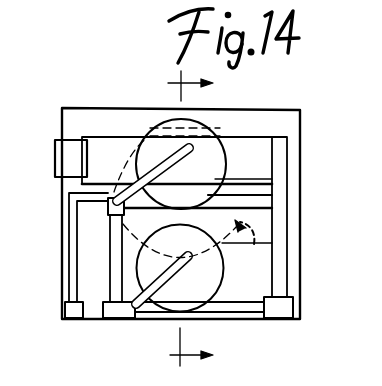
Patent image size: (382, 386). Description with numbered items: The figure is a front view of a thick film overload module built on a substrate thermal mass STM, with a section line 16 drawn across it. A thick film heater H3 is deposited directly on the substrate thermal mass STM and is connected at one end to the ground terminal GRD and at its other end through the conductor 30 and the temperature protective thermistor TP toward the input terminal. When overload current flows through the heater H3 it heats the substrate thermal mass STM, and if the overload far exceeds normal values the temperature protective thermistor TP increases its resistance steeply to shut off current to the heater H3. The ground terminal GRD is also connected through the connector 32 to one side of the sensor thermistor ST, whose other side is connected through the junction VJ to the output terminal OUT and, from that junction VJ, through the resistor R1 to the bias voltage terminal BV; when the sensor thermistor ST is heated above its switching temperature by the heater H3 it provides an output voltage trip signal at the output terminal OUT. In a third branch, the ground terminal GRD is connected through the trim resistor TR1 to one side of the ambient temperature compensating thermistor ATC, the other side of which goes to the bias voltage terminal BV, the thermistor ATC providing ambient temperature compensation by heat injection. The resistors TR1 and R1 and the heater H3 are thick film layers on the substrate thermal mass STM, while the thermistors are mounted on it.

The substrate thermal mass STM is at (79, 108).
The section line 16 is at (175, 220).
The thick film heater H3 is at (124, 118).
The conductor 30 is at (70, 154).
The sensor thermistor ST is at (194, 124).
The connector 32 is at (264, 200).
The junction VJ is at (66, 195).
The resistor R1 is at (116, 252).
The output terminal OUT is at (75, 318).
The bias voltage terminal BV is at (120, 318).
The ambient temperature compensating thermistor ATC is at (204, 294).
The temperature protective thermistor TP is at (248, 247).
The trimming resistor TR1 is at (261, 281).
The ground terminal GRD is at (287, 312).